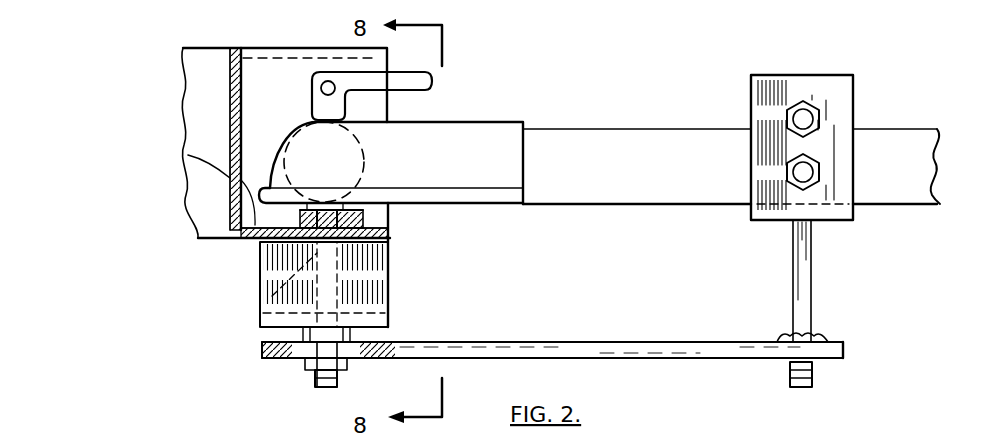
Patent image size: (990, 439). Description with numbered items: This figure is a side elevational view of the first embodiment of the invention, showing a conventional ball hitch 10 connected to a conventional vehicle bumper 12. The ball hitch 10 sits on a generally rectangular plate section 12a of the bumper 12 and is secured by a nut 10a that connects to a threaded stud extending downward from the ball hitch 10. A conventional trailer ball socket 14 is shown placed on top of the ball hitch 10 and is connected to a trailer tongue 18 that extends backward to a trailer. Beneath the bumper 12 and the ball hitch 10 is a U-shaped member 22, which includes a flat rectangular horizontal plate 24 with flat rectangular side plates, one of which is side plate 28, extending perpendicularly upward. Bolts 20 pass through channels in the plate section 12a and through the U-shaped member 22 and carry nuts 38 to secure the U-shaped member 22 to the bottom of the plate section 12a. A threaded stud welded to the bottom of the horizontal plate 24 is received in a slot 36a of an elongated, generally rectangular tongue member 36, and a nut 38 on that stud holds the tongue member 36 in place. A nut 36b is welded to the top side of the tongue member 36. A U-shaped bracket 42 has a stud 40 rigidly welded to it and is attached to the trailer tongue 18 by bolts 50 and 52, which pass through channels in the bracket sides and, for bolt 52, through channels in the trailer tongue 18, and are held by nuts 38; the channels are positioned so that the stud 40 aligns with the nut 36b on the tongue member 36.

The ball hitch 10 is at (362, 160).
The nut 10a is at (273, 295).
The vehicle bumper 12 is at (240, 247).
The plate section 12a is at (200, 183).
The trailer ball socket 14 is at (302, 119).
The trailer tongue 18 is at (588, 142).
The bolts 20 is at (367, 218).
The U-shaped member 22 is at (400, 259).
The horizontal plate 24 is at (265, 322).
The side plate 28 is at (393, 278).
The tongue member 36 is at (526, 336).
The slot 36a is at (300, 353).
The nut 36b is at (828, 334).
The nuts 38 is at (352, 334).
The stud 40 is at (808, 288).
The U-shaped bracket 42 is at (746, 91).
The bolt 50 is at (818, 116).
The bolt 52 is at (797, 172).